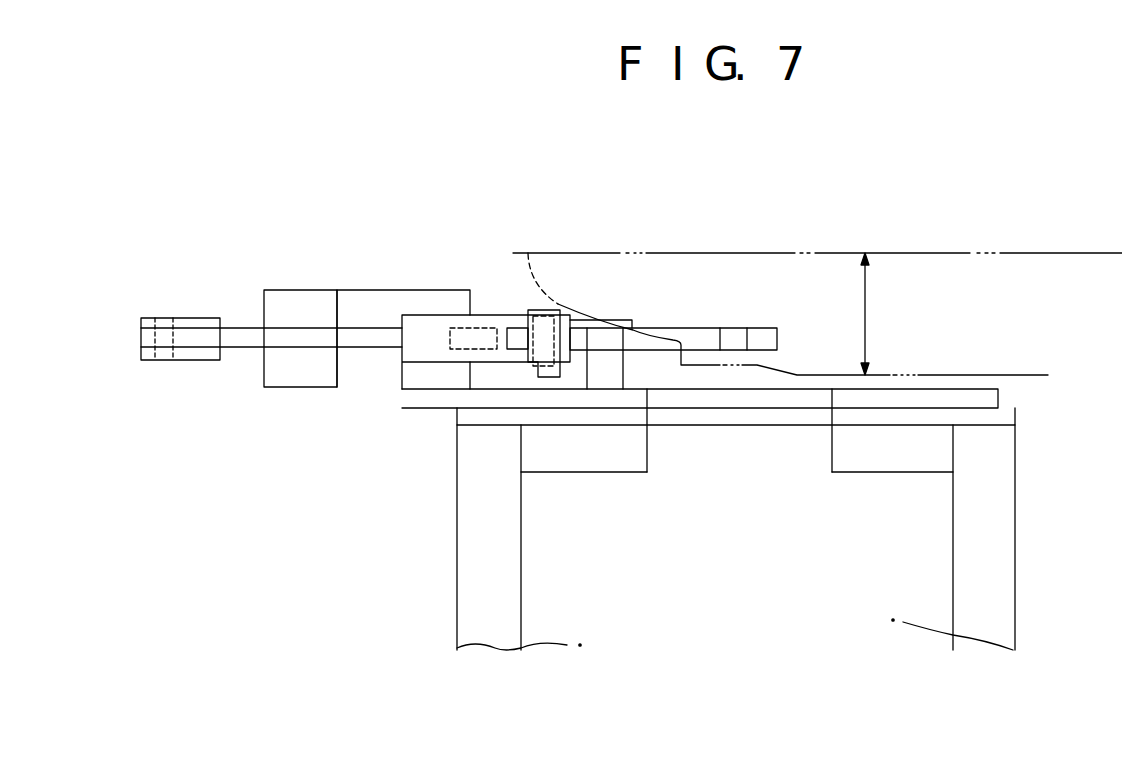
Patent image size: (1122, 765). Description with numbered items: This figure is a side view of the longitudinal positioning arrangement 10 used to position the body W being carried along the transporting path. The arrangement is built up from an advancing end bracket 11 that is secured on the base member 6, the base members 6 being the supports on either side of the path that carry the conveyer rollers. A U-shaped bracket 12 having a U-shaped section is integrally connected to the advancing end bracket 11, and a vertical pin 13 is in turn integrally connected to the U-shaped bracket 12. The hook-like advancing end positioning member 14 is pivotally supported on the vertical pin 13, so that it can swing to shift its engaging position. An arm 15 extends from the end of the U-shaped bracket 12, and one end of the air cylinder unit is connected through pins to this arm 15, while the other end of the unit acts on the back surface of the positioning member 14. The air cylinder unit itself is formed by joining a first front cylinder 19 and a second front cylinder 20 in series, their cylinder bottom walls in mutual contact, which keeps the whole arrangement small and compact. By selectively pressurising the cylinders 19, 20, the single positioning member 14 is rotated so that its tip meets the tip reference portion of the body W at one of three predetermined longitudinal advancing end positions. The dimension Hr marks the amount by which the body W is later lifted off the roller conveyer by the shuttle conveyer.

The base member 6 is at (510, 532).
The longitudinal positioning arrangement 10 is at (829, 232).
The advancing end bracket 11 is at (745, 402).
The U-shaped bracket 12 is at (420, 343).
The vertical pin 13 is at (542, 372).
The advancing end positioning member 14 is at (698, 335).
The arm 15 is at (243, 340).
The first front cylinder 19 is at (378, 300).
The second front cylinder 20 is at (295, 300).
The body W is at (537, 277).
The lift amount Hr is at (868, 312).